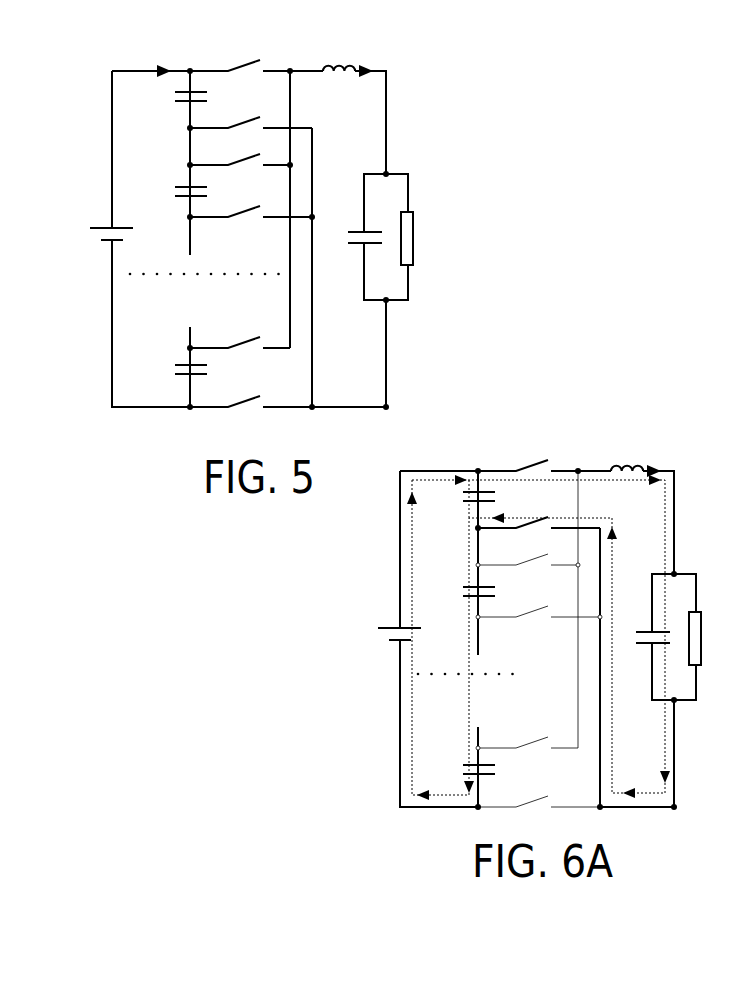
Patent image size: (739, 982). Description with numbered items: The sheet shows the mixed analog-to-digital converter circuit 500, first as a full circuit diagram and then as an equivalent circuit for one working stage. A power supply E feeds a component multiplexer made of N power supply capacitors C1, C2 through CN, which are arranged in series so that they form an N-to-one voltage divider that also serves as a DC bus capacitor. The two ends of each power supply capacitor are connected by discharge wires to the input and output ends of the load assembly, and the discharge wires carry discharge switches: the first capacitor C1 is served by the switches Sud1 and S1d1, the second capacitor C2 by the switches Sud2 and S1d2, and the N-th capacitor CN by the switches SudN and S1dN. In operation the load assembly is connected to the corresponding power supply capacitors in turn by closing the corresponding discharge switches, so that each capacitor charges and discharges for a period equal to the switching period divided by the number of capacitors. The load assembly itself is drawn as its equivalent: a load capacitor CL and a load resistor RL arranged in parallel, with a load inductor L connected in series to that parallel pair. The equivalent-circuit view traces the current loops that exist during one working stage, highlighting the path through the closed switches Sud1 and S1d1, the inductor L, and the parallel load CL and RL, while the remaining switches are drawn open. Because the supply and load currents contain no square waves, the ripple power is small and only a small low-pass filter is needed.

In FIG. 5, the mixed analog-to-digital converter circuit 500 is at (299, 219).
In FIG. 6A, the mixed analog-to-digital converter circuit 500 is at (549, 586).
In FIG. 5, the power supply E is at (107, 215).
In FIG. 6A, the power supply E is at (395, 615).
In FIG. 5, the first power supply capacitor C1 is at (172, 100).
In FIG. 6A, the first power supply capacitor C1 is at (460, 500).
In FIG. 5, the second power supply capacitor C2 is at (172, 193).
In FIG. 6A, the second power supply capacitor C2 is at (460, 593).
In FIG. 5, the N-th power supply capacitor CN is at (172, 376).
In FIG. 6A, the N-th power supply capacitor CN is at (460, 776).
In FIG. 5, the load inductor L is at (339, 86).
In FIG. 6A, the load inductor L is at (627, 486).
In FIG. 5, the load capacitor CL is at (359, 215).
In FIG. 6A, the load capacitor CL is at (647, 615).
In FIG. 5, the load resistor RL is at (421, 224).
In FIG. 6A, the load resistor RL is at (709, 624).
In FIG. 5, the discharge switch Sud1 is at (240, 49).
In FIG. 6A, the discharge switch Sud1 is at (528, 449).
In FIG. 5, the discharge switch S1d1 is at (251, 106).
In FIG. 6A, the discharge switch S1d1 is at (539, 506).
In FIG. 5, the discharge switch Sud2 is at (240, 177).
In FIG. 6A, the discharge switch Sud2 is at (528, 577).
In FIG. 5, the discharge switch S1d2 is at (251, 229).
In FIG. 6A, the discharge switch S1d2 is at (539, 629).
In FIG. 5, the discharge switch SudN is at (240, 326).
In FIG. 6A, the discharge switch SudN is at (528, 726).
In FIG. 5, the discharge switch S1dN is at (251, 385).
In FIG. 6A, the discharge switch S1dN is at (539, 785).